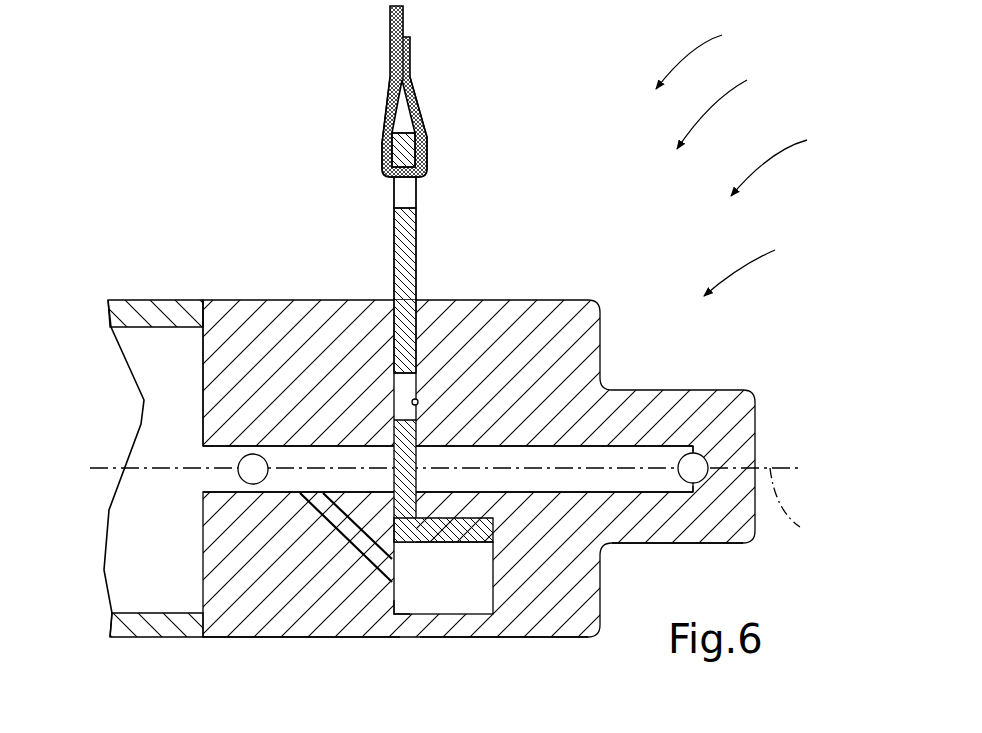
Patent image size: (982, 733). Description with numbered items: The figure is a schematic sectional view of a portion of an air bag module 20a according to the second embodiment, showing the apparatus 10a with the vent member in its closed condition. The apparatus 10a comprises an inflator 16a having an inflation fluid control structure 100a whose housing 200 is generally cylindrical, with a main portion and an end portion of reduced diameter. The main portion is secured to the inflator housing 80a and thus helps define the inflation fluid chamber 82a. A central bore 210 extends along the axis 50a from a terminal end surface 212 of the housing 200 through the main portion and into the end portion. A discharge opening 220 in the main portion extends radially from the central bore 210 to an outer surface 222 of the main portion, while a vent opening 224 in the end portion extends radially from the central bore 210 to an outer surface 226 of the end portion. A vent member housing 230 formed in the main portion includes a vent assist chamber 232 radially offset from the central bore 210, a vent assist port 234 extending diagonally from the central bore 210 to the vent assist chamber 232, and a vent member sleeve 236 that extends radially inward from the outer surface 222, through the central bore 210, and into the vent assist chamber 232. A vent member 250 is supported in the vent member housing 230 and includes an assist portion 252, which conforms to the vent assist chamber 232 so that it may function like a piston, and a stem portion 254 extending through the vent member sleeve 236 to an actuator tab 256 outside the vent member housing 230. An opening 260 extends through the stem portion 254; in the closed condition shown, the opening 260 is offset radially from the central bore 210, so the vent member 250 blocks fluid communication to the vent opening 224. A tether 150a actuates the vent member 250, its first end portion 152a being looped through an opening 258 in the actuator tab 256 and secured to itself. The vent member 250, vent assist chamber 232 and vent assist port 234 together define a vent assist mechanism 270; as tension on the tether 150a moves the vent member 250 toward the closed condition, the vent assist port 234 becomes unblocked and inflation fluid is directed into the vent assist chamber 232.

The apparatus 10a is at (789, 162).
The inflator 16a is at (760, 267).
The air bag module 20a is at (711, 56).
The inflation fluid control structure 100a is at (738, 108).
The axis 50a is at (805, 508).
The inflator housing 80a is at (158, 312).
The inflation fluid chamber 82a is at (158, 372).
The tether 150a is at (408, 91).
The first end portion 152a is at (385, 118).
The housing 200 is at (540, 300).
The central bore 210 is at (292, 460).
The terminal end surface 212 is at (200, 410).
The discharge opening 220 is at (243, 478).
The outer surface of the main portion 222 is at (292, 637).
The vent opening 224 is at (703, 461).
The outer surface of the end portion 226 is at (661, 547).
The vent member housing 230 is at (474, 639).
The vent assist chamber 232 is at (430, 597).
The vent assist port 234 is at (342, 528).
The vent member sleeve 236 is at (416, 401).
The vent member 250 is at (441, 428).
The assist portion 252 is at (465, 530).
The stem portion 254 is at (405, 333).
The actuator tab 256 is at (408, 157).
The opening in the actuator tab 258 is at (408, 193).
The opening 260 is at (402, 388).
The vent assist mechanism 270 is at (411, 618).